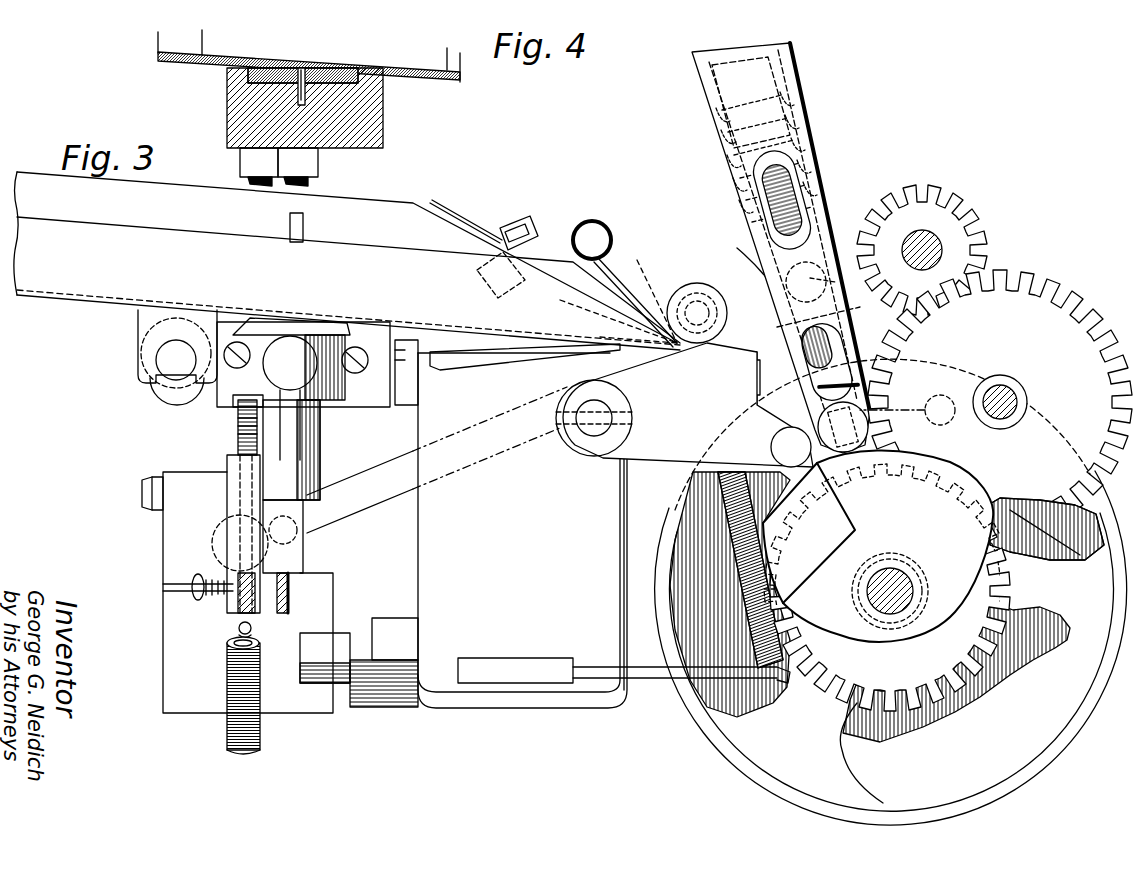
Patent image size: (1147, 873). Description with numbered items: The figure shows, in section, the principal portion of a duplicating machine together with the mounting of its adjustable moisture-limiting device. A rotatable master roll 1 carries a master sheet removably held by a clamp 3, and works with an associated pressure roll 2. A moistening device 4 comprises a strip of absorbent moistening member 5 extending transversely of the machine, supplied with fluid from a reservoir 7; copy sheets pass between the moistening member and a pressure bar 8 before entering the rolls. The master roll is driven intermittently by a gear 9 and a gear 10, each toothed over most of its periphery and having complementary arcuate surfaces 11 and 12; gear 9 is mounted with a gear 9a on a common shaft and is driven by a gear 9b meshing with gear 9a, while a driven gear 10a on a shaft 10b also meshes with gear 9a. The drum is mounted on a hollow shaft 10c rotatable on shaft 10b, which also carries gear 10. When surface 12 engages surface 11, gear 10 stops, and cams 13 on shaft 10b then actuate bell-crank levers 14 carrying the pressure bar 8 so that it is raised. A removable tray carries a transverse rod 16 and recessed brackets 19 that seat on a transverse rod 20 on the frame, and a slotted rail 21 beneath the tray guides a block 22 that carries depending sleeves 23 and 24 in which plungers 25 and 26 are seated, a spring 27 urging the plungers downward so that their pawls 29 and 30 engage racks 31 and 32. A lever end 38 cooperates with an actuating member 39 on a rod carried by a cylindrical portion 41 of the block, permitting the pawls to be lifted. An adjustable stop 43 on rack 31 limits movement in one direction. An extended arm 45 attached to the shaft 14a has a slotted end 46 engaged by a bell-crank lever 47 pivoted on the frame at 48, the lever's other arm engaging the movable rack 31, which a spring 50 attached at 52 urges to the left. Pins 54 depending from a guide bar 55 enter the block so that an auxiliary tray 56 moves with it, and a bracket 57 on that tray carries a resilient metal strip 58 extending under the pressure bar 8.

In FIG. 3, the master roll 1 is at (1055, 760).
In FIG. 3, the pressure roll 2 is at (852, 245).
In FIG. 3, the clamp 3 is at (786, 400).
In FIG. 3, the moistening device 4 is at (545, 542).
In FIG. 3, the moistening member 5 is at (525, 352).
In FIG. 3, the reservoir 7 is at (580, 710).
In FIG. 3, the pressure bar 8 is at (700, 290).
In FIG. 3, the gear 9 is at (1078, 320).
In FIG. 3, the gear 9a is at (1025, 315).
In FIG. 3, the gear 9b is at (960, 236).
In FIG. 3, the gear 10 is at (1005, 575).
In FIG. 3, the driven gear 10a is at (1003, 600).
In FIG. 3, the shaft 10b is at (893, 566).
In FIG. 3, the hollow shaft 10c is at (925, 575).
In FIG. 3, the arcuate surface 11 is at (1060, 548).
In FIG. 3, the arcuate surface 12 is at (925, 500).
In FIG. 3, the cams 13 is at (875, 645).
In FIG. 3, the bell-crank levers 14 is at (672, 458).
In FIG. 3, the shaft 14a is at (590, 425).
In FIG. 3, the transverse rod 16 is at (612, 240).
In FIG. 3, the recessed brackets 19 is at (160, 357).
In FIG. 3, the transverse rod 20 is at (170, 384).
In FIG. 4, the slotted rail 21 is at (248, 75).
In FIG. 3, the slotted rail 21 is at (340, 325).
In FIG. 4, the block 22 is at (383, 116).
In FIG. 3, the block 22 is at (365, 407).
In FIG. 4, the sleeve 23 is at (240, 165).
In FIG. 3, the sleeve 23 is at (233, 405).
In FIG. 4, the sleeve 24 is at (318, 158).
In FIG. 4, the plunger 25 is at (248, 182).
In FIG. 3, the plunger 25 is at (238, 432).
In FIG. 4, the plunger 26 is at (308, 184).
In FIG. 3, the spring 27 is at (238, 440).
In FIG. 3, the pawl 29 is at (240, 493).
In FIG. 3, the pawl 30 is at (305, 556).
In FIG. 3, the rack 31 is at (238, 612).
In FIG. 3, the rack 32 is at (290, 610).
In FIG. 3, the end of lever 38 is at (290, 440).
In FIG. 3, the actuating member 39 is at (310, 370).
In FIG. 3, the cylindrical portion 41 is at (270, 378).
In FIG. 3, the adjustable stop 43 is at (228, 598).
In FIG. 3, the extended arm 45 is at (372, 512).
In FIG. 3, the slotted end 46 is at (232, 548).
In FIG. 3, the bell-crank lever 47 is at (227, 466).
In FIG. 3, the pivot 48 is at (142, 495).
In FIG. 3, the spring 50 is at (260, 737).
In FIG. 3, the attachment point 52 is at (240, 635).
In FIG. 4, the pins 54 is at (305, 95).
In FIG. 4, the guide bar 55 is at (300, 82).
In FIG. 4, the auxiliary tray 56 is at (372, 70).
In FIG. 3, the auxiliary tray 56 is at (420, 203).
In FIG. 3, the bracket 57 is at (498, 232).
In FIG. 3, the resilient metal strip 58 is at (600, 335).